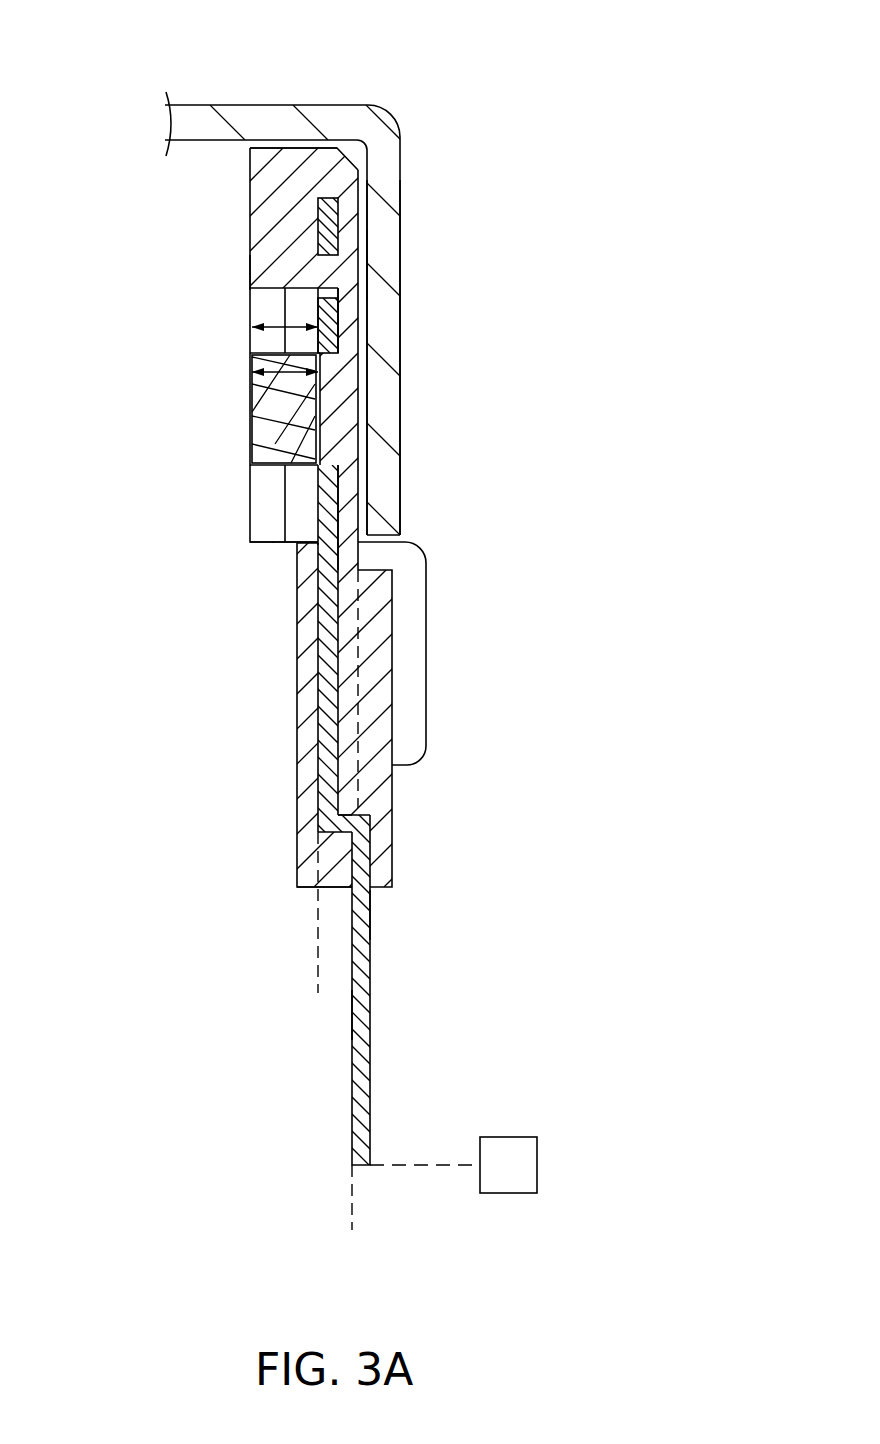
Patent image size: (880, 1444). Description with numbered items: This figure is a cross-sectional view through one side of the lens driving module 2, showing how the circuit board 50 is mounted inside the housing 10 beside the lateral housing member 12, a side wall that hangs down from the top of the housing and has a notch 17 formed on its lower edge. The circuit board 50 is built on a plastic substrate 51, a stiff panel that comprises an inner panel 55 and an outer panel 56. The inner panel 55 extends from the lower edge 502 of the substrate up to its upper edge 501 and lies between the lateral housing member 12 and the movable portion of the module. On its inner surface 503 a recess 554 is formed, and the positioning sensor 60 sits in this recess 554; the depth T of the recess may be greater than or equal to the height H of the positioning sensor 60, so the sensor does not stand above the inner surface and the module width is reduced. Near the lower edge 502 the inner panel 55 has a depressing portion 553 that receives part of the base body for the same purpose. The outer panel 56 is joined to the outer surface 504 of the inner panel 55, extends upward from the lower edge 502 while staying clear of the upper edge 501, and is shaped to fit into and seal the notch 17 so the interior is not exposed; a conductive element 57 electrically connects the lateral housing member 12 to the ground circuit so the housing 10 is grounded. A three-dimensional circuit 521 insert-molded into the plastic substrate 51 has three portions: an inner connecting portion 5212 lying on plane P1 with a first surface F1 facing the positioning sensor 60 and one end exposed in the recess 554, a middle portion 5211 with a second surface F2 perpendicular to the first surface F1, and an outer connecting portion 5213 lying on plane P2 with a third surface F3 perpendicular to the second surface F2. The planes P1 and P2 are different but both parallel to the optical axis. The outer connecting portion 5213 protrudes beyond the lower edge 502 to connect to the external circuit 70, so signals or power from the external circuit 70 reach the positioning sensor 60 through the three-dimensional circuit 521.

The lens driving module 2 is at (94, 63).
The upper edge 501 is at (292, 152).
The circuit board 50 is at (246, 205).
The plastic substrate 51 is at (285, 240).
The inner surface 503 is at (250, 272).
The depth of recess T is at (282, 325).
The height of positioning sensor H is at (284, 374).
The positioning sensor 60 is at (282, 434).
The recess 554 is at (266, 488).
The inner connecting portion 5212 is at (325, 520).
The housing 10 is at (404, 205).
The lateral housing member 12 is at (385, 240).
The outer surface 504 is at (368, 263).
The inner panel 55 is at (347, 410).
The notch 17 is at (382, 536).
The conductive element 57 is at (410, 600).
The outer panel 56 is at (372, 692).
The first surface F1 is at (325, 650).
The depressing portion 553 is at (266, 797).
The second surface F2 is at (344, 814).
The middle portion 5211 is at (348, 823).
The lower edge 502 is at (318, 888).
The plane P1 is at (322, 930).
The third surface F3 is at (372, 913).
The 3-D circuit 521 is at (373, 957).
The outer connecting portion 5213 is at (360, 1010).
The external circuit 70 is at (510, 1137).
The plane P2 is at (350, 1211).